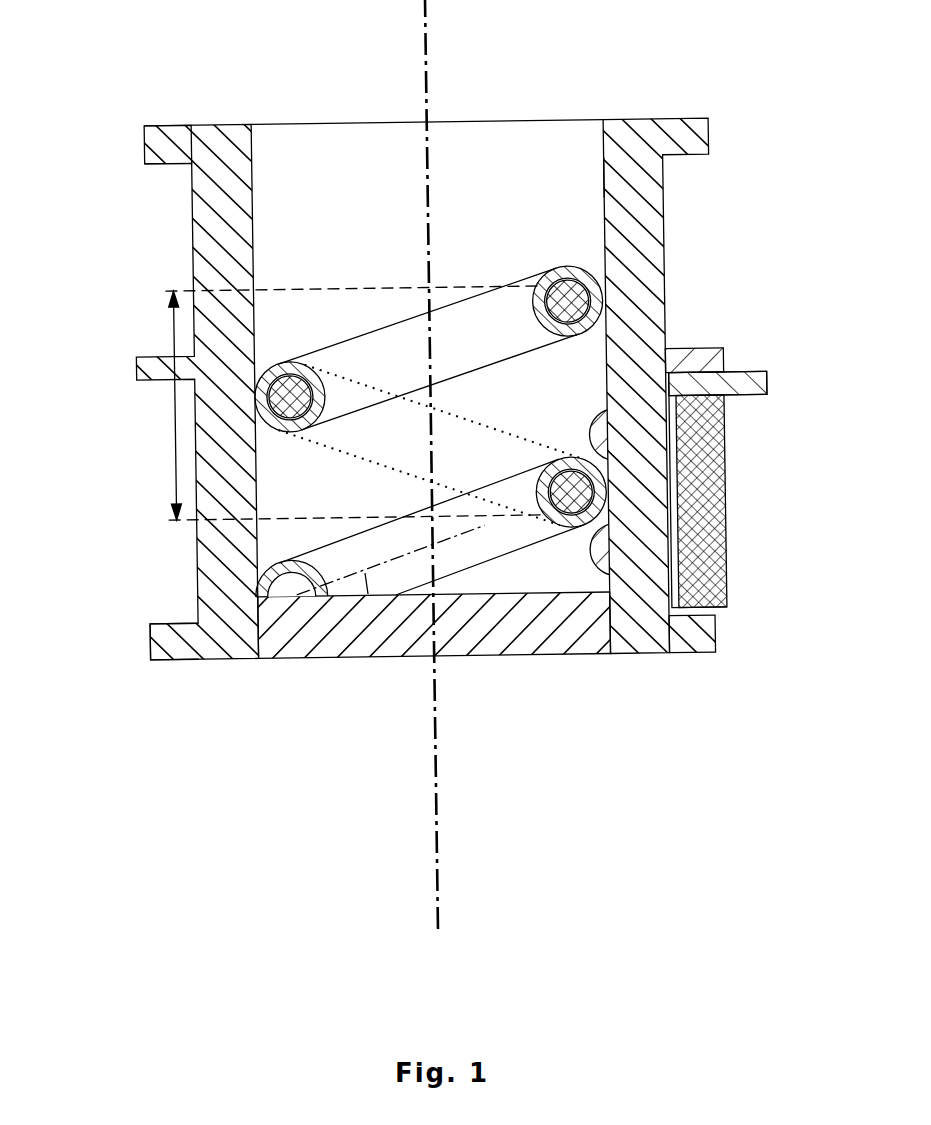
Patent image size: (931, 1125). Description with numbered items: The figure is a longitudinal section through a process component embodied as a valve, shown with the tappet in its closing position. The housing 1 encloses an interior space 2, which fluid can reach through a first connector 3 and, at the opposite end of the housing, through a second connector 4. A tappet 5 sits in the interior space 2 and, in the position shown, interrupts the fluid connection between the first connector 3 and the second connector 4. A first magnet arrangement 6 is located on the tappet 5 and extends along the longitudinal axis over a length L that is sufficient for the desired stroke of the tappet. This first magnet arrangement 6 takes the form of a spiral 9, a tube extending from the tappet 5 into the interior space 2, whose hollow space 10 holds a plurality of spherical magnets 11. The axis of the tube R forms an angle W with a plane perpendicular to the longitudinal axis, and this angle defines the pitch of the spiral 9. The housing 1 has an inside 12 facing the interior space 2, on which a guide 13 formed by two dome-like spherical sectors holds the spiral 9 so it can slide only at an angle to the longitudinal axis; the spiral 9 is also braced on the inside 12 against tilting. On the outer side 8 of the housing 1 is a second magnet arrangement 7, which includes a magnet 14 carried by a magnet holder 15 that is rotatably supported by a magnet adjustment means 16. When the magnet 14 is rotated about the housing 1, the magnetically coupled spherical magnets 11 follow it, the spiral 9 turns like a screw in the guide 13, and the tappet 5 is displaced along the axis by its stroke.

The housing 1 is at (212, 245).
The interior space 2 is at (283, 253).
The first connector 3 is at (172, 640).
The second connector 4 is at (160, 150).
The tappet 5 is at (468, 630).
The first magnet arrangement 6 is at (520, 562).
The second magnet arrangement 7 is at (742, 575).
The outer side 8 is at (670, 212).
The spiral 9 is at (323, 562).
The hollow space 10 is at (290, 580).
The spherical magnets 11 is at (586, 305).
The inside 12 is at (600, 188).
The guide 13 is at (602, 435).
The magnet 14 is at (727, 438).
The magnet holder 15 is at (757, 382).
The magnet adjustment means 16 is at (707, 363).
The length L is at (170, 440).
The angle W is at (343, 590).
The axis of the tube R is at (380, 568).